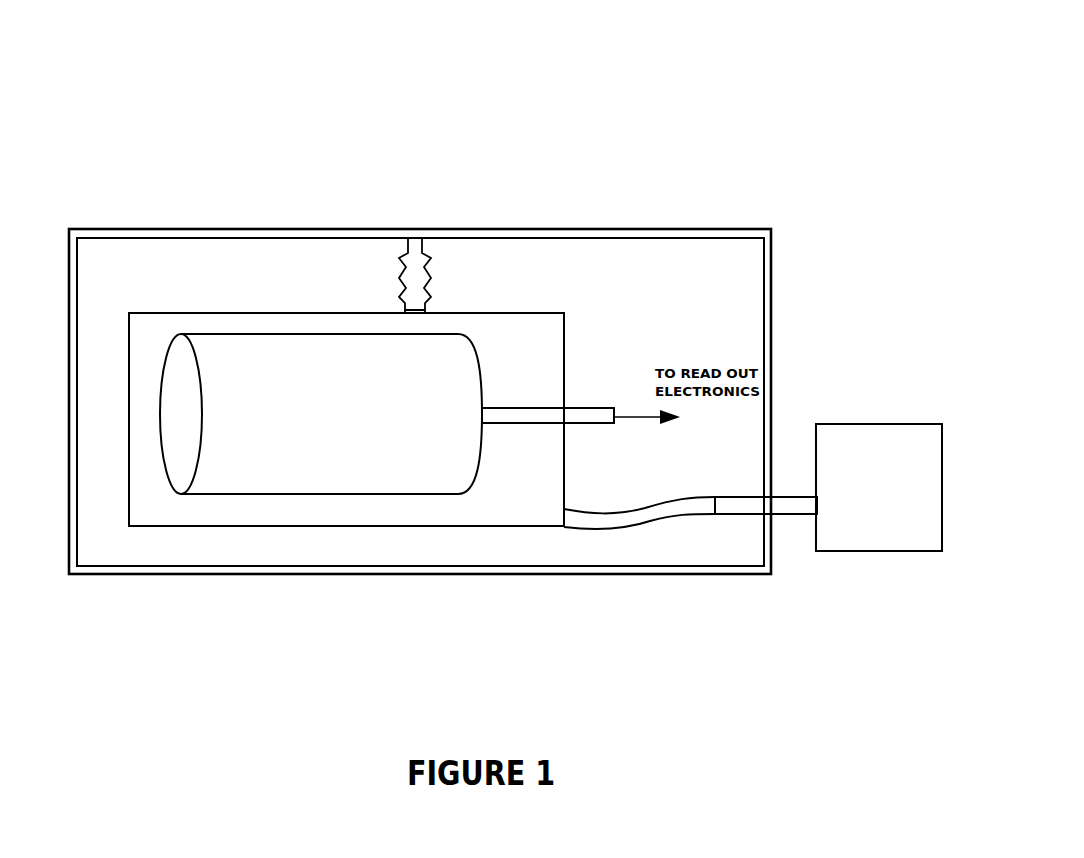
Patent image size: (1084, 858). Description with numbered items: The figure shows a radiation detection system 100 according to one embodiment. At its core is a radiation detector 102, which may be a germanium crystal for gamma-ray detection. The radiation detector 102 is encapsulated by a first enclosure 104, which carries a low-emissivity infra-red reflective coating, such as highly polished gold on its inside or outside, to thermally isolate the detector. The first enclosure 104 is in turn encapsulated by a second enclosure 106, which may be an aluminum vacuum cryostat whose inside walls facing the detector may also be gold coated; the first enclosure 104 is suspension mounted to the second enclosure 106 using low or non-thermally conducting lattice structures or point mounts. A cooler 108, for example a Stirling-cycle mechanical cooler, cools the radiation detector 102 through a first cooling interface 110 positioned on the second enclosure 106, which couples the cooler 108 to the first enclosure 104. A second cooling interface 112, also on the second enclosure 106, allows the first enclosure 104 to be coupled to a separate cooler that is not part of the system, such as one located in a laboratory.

The radiation detection system 100 is at (858, 102).
The radiation detector 102 is at (348, 417).
The first enclosure 104 is at (520, 312).
The second enclosure 106 is at (663, 229).
The cooler 108 is at (860, 423).
The first cooling interface 110 is at (782, 535).
The second cooling interface 112 is at (385, 253).